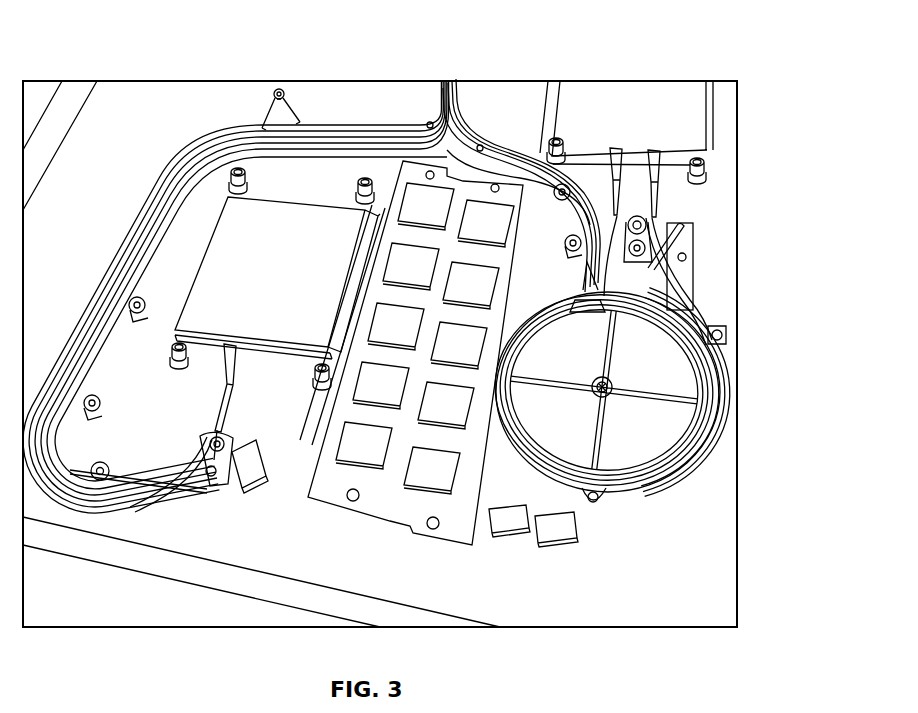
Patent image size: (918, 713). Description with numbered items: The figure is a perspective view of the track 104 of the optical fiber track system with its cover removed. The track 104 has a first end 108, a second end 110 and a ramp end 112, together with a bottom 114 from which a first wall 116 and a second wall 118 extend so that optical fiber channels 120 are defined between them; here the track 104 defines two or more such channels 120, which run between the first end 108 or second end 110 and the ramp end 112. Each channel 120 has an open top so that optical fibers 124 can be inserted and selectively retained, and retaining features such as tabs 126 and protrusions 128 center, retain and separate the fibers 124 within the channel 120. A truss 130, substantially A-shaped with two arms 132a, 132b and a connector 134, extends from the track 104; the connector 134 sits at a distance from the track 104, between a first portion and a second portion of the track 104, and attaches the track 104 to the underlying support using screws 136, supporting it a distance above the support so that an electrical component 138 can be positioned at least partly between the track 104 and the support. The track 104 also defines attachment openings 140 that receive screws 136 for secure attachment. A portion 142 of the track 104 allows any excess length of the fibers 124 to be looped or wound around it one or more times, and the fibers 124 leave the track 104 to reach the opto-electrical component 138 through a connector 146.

The track 104 is at (122, 242).
The first end 108 is at (246, 441).
The second end 110 is at (683, 233).
The ramp end 112 is at (457, 107).
The bottom 114 is at (645, 490).
The first wall 116 is at (700, 300).
The second wall 118 is at (683, 270).
The optical fiber channel 120 is at (500, 147).
The optical fiber 124 is at (215, 440).
The tab 126 is at (593, 290).
The protrusion 128 is at (152, 486).
The truss 130 is at (76, 470).
The arm 132a is at (268, 120).
The arm 132b is at (302, 118).
The connector 134 is at (281, 90).
The screw 136 is at (612, 383).
The electrical component 138 is at (292, 275).
The attachment opening 140 is at (723, 334).
The portion 142 is at (562, 468).
The connector 146 is at (268, 352).